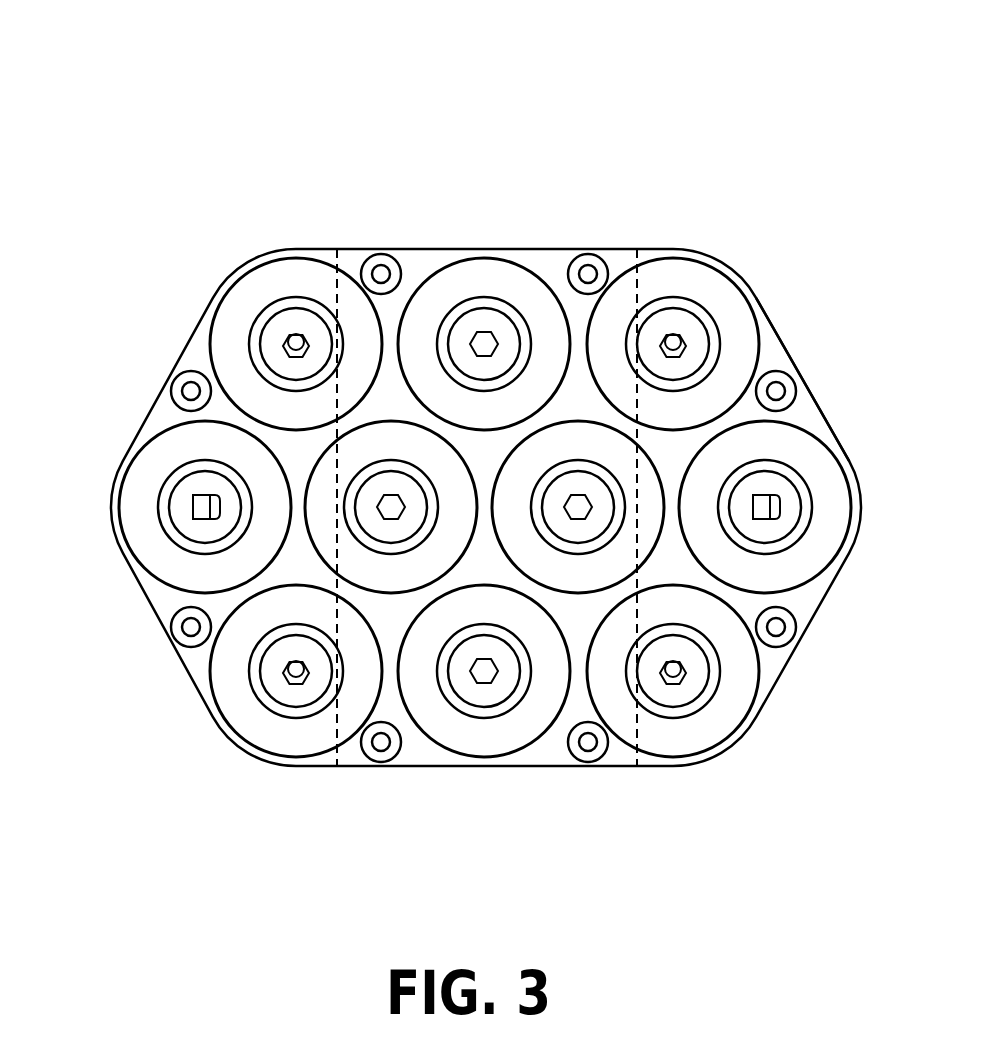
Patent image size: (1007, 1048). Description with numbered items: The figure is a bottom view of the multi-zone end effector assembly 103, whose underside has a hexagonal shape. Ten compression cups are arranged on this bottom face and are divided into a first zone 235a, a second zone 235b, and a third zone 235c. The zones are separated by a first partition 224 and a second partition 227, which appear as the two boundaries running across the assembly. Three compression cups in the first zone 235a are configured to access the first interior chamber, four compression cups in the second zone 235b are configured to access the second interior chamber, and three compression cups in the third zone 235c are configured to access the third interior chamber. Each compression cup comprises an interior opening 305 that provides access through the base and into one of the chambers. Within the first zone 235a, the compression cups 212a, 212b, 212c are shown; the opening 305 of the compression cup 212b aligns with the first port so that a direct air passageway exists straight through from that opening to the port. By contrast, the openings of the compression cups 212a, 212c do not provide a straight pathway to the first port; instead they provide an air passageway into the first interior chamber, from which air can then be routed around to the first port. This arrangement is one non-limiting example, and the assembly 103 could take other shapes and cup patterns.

The multi-zone end effector assembly 103 is at (376, 58).
The first zone 235a is at (228, 253).
The second zone 235b is at (486, 225).
The third zone 235c is at (766, 280).
The first partition 224 is at (336, 249).
The second partition 227 is at (636, 250).
The compression cup 212a is at (222, 306).
The compression cup 212b is at (120, 479).
The compression cup 212c is at (212, 677).
The interior opening 305 is at (180, 512).